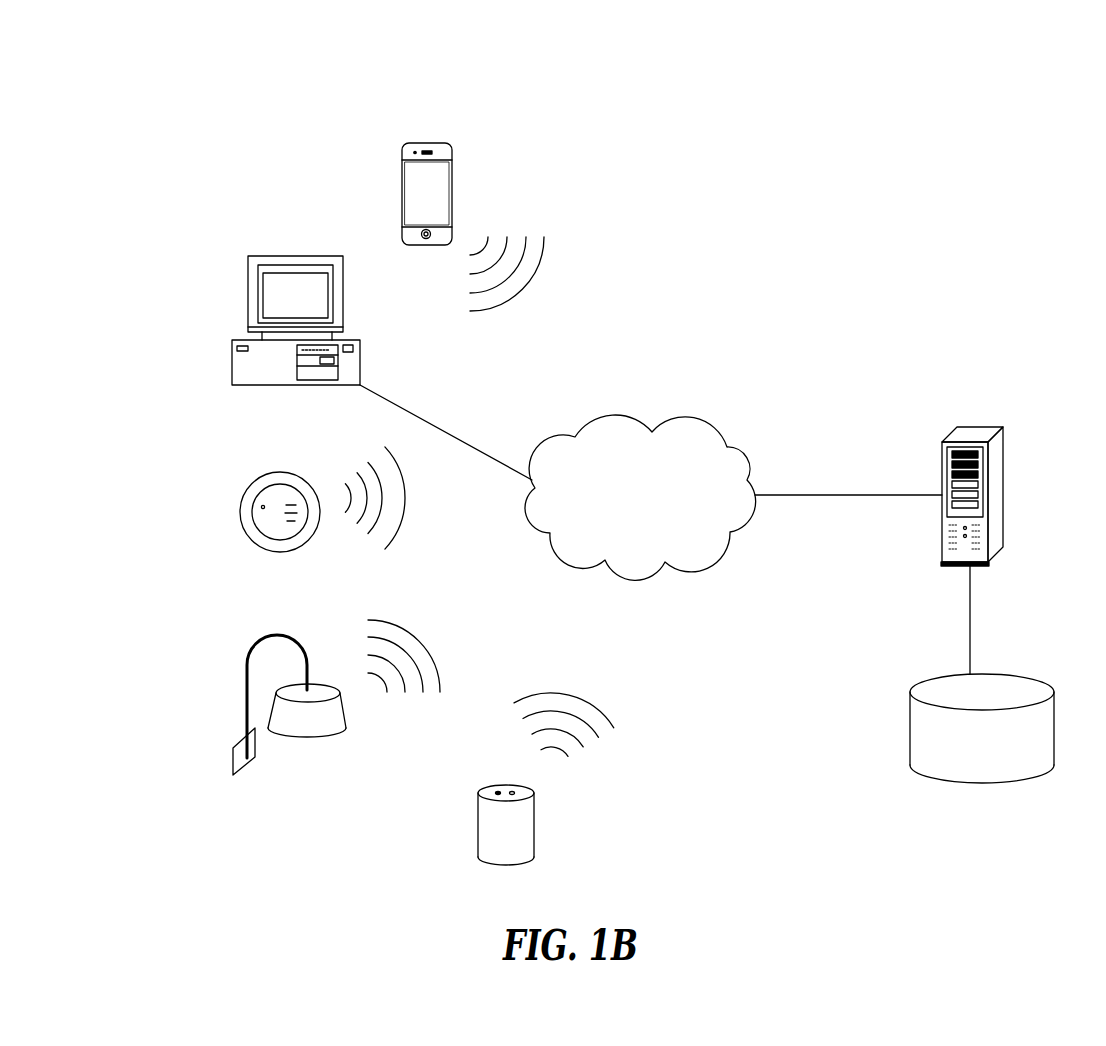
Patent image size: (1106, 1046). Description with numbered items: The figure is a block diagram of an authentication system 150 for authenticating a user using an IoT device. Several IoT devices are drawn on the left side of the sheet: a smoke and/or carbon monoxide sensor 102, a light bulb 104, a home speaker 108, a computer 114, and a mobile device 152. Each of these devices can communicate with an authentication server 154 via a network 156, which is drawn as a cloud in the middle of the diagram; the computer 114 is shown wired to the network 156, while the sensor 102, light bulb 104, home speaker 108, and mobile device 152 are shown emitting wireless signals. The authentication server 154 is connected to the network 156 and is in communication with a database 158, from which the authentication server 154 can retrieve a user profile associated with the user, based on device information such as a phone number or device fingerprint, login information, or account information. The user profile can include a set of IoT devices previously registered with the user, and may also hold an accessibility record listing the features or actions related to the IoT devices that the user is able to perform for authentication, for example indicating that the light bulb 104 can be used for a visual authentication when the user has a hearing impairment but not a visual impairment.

The authentication system 150 is at (952, 133).
The mobile device 152 is at (443, 141).
The computer 114 is at (246, 300).
The smoke and/or carbon monoxide sensor 102 is at (236, 512).
The light bulb 104 is at (240, 700).
The home speaker 108 is at (478, 827).
The network 156 is at (697, 415).
The authentication server 154 is at (984, 426).
The database 158 is at (1032, 678).